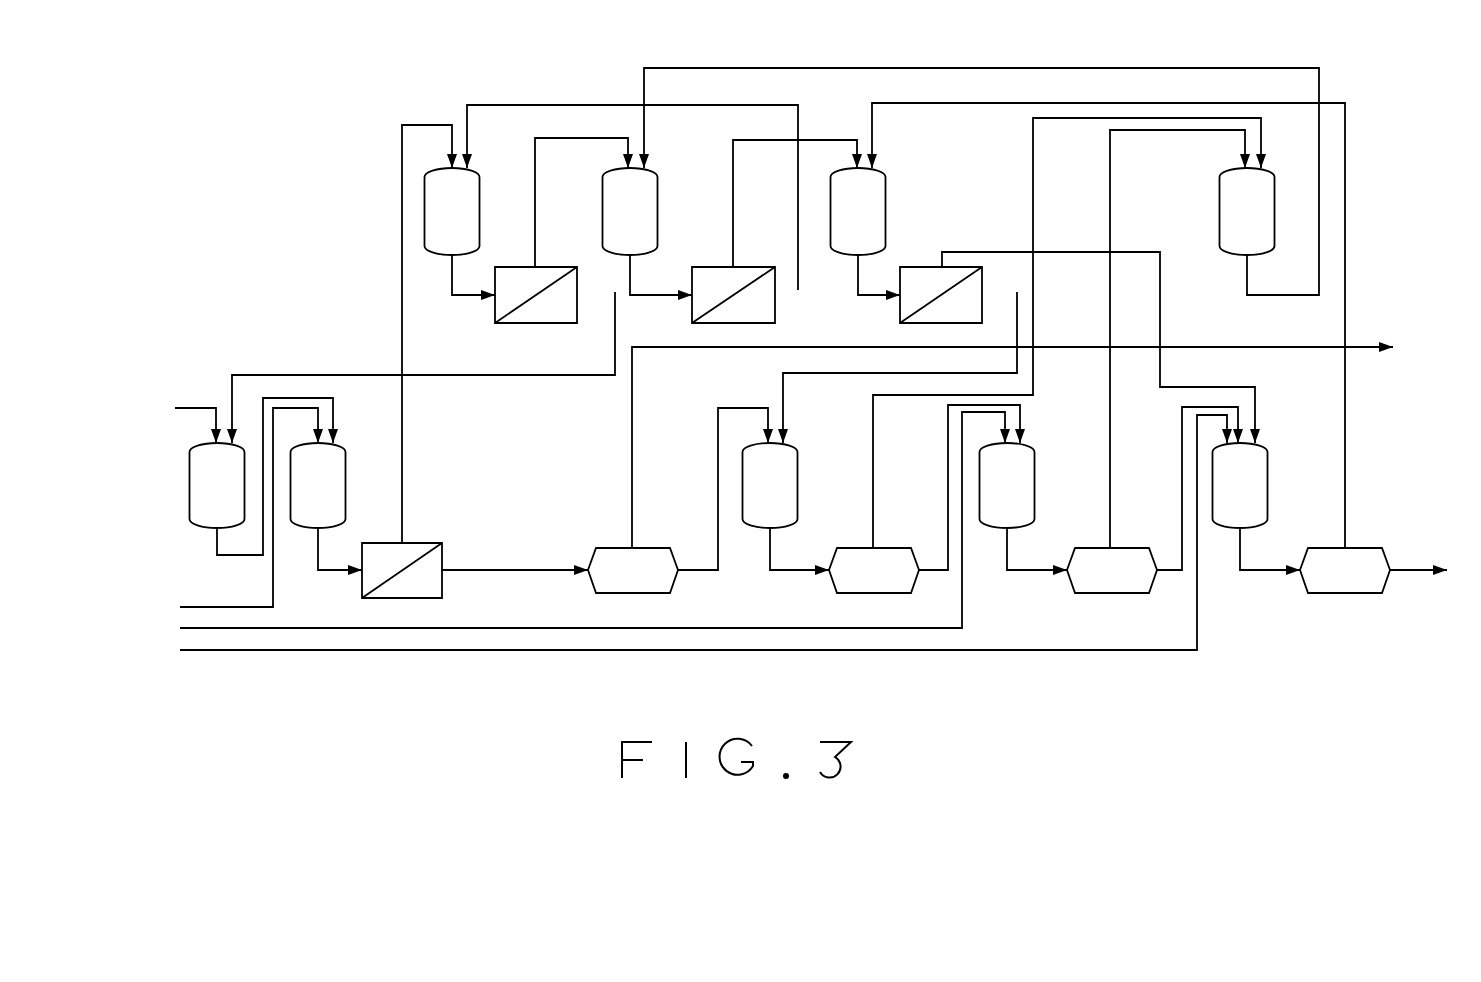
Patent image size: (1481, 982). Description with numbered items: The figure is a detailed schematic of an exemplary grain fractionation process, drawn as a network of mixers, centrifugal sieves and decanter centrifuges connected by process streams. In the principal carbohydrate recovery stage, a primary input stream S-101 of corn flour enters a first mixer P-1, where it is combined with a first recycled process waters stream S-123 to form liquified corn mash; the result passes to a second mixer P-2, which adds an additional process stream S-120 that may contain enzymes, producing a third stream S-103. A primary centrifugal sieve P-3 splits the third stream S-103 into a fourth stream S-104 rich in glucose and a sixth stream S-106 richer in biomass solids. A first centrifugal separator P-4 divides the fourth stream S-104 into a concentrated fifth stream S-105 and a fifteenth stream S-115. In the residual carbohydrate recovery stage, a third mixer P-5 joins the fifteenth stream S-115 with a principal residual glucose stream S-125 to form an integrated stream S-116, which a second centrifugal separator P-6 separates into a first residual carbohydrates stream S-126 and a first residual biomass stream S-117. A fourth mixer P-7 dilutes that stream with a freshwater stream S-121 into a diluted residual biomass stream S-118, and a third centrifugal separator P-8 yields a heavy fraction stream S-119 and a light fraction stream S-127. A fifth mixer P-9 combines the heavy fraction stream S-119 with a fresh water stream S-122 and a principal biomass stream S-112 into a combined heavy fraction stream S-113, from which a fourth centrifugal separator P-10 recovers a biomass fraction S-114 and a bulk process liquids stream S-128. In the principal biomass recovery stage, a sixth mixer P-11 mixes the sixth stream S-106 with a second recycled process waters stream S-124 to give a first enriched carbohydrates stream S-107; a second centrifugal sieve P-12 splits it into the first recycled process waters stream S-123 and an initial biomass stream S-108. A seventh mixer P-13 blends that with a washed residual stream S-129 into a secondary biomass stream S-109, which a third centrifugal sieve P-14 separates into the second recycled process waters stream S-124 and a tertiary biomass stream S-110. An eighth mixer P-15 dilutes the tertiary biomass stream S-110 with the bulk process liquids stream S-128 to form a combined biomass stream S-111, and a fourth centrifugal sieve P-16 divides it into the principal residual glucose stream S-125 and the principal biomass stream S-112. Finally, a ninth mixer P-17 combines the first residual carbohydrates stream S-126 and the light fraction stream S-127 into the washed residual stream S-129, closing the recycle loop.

The first mixer P-1 is at (258, 476).
The second mixer P-2 is at (318, 485).
The primary centrifugal sieve P-3 is at (402, 570).
The first centrifugal separator P-4 is at (633, 570).
The third mixer P-5 is at (770, 485).
The second centrifugal separator P-6 is at (874, 570).
The fourth mixer P-7 is at (1007, 485).
The third centrifugal separator P-8 is at (1112, 570).
The fifth mixer P-9 is at (1240, 485).
The fourth centrifugal separator P-10 is at (1345, 570).
The sixth mixer P-11 is at (452, 211).
The second centrifugal sieve P-12 is at (536, 295).
The seventh mixer P-13 is at (630, 211).
The third centrifugal sieve P-14 is at (733, 295).
The eighth mixer P-15 is at (858, 211).
The fourth centrifugal sieve P-16 is at (941, 295).
The ninth mixer P-17 is at (1247, 211).
The primary input stream S-101 is at (164, 420).
The third stream S-103 is at (328, 564).
The fourth stream S-104 is at (515, 561).
The fifth stream S-105 is at (1045, 442).
The sixth stream S-106 is at (421, 319).
The first enriched carbohydrates stream S-107 is at (457, 290).
The initial biomass stream S-108 is at (581, 202).
The secondary biomass stream S-109 is at (657, 290).
The tertiary biomass stream S-110 is at (792, 192).
The combined biomass stream S-111 is at (867, 290).
The principal biomass stream S-112 is at (1098, 337).
The combined heavy fraction stream S-113 is at (1268, 564).
The biomass fraction S-114 is at (1424, 585).
The fifteenth stream S-115 is at (723, 504).
The integrated stream S-116 is at (798, 564).
The first residual biomass stream S-117 is at (933, 575).
The diluted residual biomass stream S-118 is at (1033, 564).
The heavy fraction stream S-119 is at (1172, 575).
The additional process stream S-120 is at (215, 514).
The freshwater stream S-121 is at (559, 527).
The fresh water stream S-122 is at (670, 539).
The first recycled process waters stream S-123 is at (423, 367).
The second recycled process waters stream S-124 is at (632, 184).
The principal residual glucose stream S-125 is at (900, 367).
The first residual carbohydrates stream S-126 is at (1067, 333).
The light fraction stream S-127 is at (1177, 339).
The bulk process liquids stream S-128 is at (1108, 325).
The washed residual stream S-129 is at (981, 185).